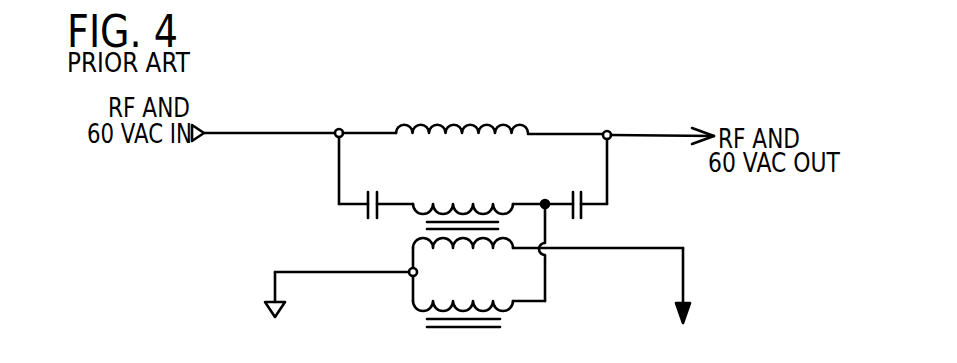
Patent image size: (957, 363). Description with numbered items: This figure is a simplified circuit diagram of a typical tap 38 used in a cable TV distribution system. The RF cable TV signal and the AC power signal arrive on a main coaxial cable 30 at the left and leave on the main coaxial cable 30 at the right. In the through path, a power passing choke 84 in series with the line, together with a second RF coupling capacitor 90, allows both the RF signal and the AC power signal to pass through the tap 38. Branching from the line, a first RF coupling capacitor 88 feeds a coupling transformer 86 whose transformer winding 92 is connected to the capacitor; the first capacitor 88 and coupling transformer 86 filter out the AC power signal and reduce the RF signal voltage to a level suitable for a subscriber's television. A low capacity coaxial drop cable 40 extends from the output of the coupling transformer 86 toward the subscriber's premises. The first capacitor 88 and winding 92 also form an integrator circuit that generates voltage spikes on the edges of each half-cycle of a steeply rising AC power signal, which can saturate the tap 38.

The main coaxial cable 30 is at (270, 133).
The tap 38 is at (230, 212).
The drop cable 40 is at (686, 281).
The power passing choke 84 is at (525, 126).
The coupling transformer 86 is at (423, 243).
The first RF coupling capacitor 88 is at (365, 208).
The second RF coupling capacitor 90 is at (586, 212).
The transformer winding 92 is at (452, 207).